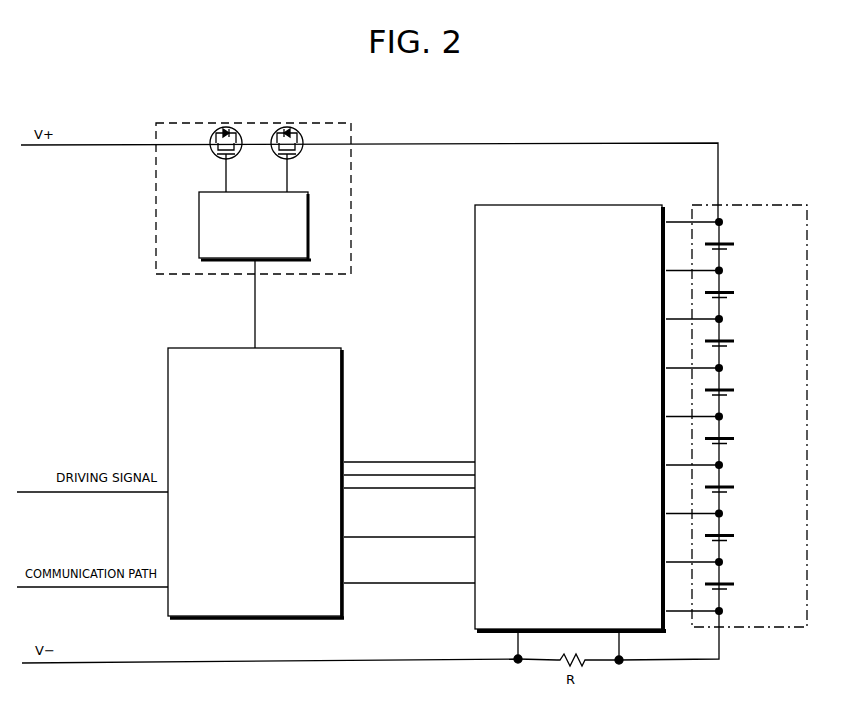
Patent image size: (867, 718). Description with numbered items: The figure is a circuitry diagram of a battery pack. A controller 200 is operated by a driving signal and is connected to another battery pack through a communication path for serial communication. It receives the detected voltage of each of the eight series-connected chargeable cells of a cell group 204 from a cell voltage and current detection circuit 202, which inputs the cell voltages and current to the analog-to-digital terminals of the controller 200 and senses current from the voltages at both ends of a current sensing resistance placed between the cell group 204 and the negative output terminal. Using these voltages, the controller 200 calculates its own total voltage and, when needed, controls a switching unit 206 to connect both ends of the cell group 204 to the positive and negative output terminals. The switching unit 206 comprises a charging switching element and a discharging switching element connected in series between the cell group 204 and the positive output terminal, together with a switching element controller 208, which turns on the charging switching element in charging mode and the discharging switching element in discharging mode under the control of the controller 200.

The controller 200 is at (311, 348).
The cell voltage and current detection circuit 202 is at (630, 205).
The cell group 204 is at (792, 205).
The switching unit 206 is at (331, 123).
The switching element controller 208 is at (199, 225).